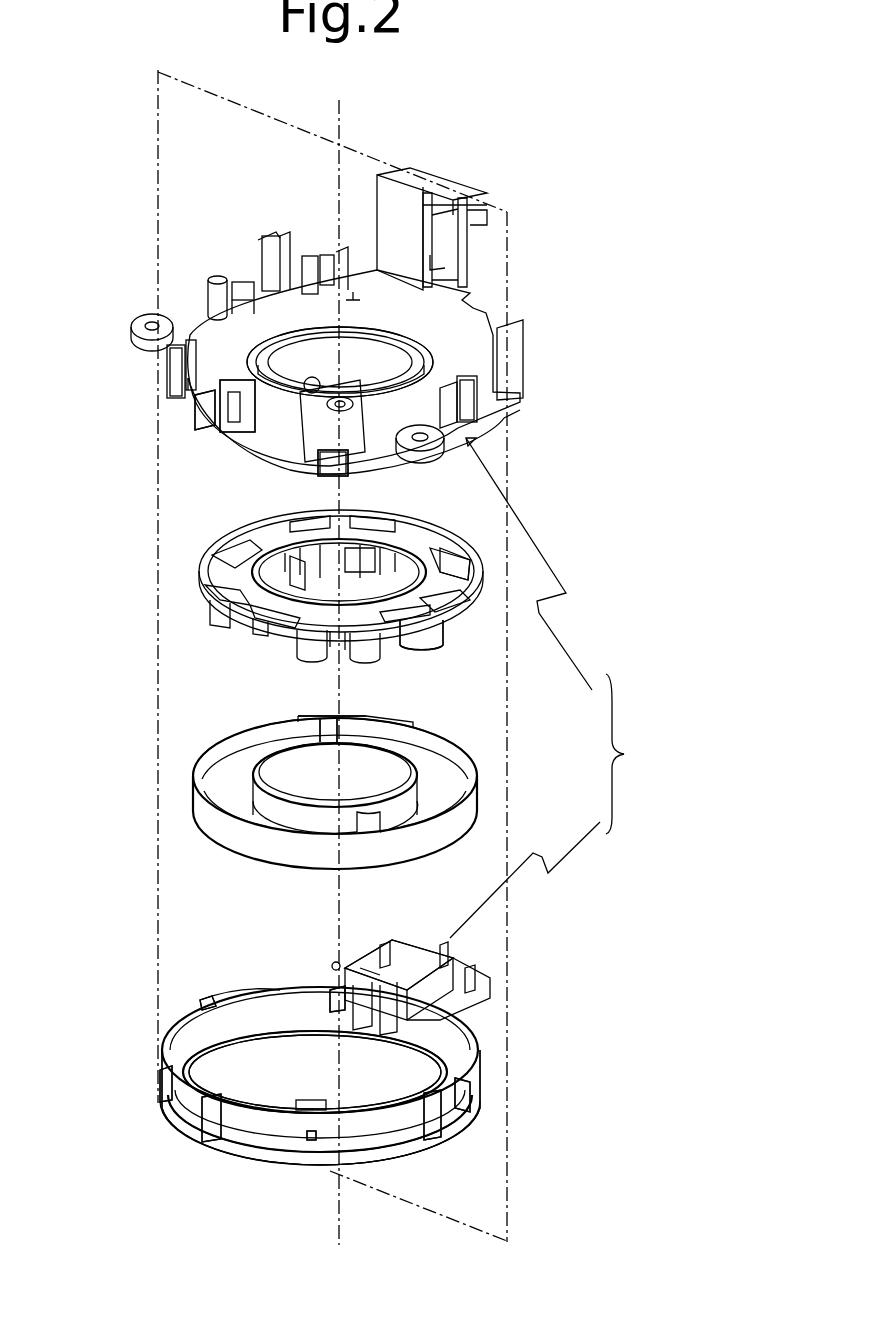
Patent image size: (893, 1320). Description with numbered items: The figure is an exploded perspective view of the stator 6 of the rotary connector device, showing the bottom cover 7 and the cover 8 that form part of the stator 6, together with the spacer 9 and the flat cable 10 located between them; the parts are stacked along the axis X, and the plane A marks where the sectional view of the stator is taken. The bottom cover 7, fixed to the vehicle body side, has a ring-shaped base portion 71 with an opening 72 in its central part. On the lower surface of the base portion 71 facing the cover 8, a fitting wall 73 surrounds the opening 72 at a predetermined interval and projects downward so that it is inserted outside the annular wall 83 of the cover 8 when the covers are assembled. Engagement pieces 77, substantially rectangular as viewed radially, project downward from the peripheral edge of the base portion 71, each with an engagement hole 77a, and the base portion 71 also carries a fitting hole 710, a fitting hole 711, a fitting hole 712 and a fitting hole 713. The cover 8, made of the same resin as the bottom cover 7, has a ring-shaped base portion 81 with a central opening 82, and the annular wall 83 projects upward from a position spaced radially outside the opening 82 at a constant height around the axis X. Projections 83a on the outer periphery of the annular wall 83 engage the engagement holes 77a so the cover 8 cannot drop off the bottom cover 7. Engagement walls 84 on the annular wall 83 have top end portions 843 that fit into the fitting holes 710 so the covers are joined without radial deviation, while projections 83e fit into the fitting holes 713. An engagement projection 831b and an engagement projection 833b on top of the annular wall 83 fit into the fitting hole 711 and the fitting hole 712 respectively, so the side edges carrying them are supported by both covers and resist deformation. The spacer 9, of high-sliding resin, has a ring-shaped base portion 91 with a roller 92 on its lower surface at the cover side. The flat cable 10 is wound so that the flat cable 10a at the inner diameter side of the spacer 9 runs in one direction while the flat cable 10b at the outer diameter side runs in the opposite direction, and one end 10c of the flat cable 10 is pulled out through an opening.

The plane A is at (158, 153).
The axis X is at (338, 656).
The stator 6 is at (625, 754).
The bottom cover 7 is at (536, 576).
The cover 8 is at (530, 866).
The spacer 9 is at (213, 543).
The flat cable 10 is at (197, 752).
The flat cable at inner diameter side 10a is at (266, 752).
The flat cable at outer diameter side 10b is at (458, 752).
The one end of flat cable 10c is at (308, 716).
The base portion 71 is at (427, 320).
The opening 72 is at (376, 378).
The fitting wall 73 is at (262, 452).
The engagement piece 77 is at (190, 400).
The engagement hole 77a is at (352, 462).
The base portion 91 is at (462, 545).
The roller 92 is at (422, 647).
The fitting hole 710 is at (222, 318).
The fitting hole 711 is at (400, 307).
The fitting hole 712 is at (353, 292).
The fitting hole 713 is at (262, 268).
The base portion 81 is at (200, 1062).
The opening 82 is at (386, 1080).
The annular wall 83 is at (362, 1150).
The projection 83a is at (160, 1070).
The projection 83e is at (268, 998).
The engagement wall 84 is at (172, 1126).
The top end portion 843 is at (204, 1003).
The engagement projection 831b is at (378, 982).
The engagement projection 833b is at (332, 964).